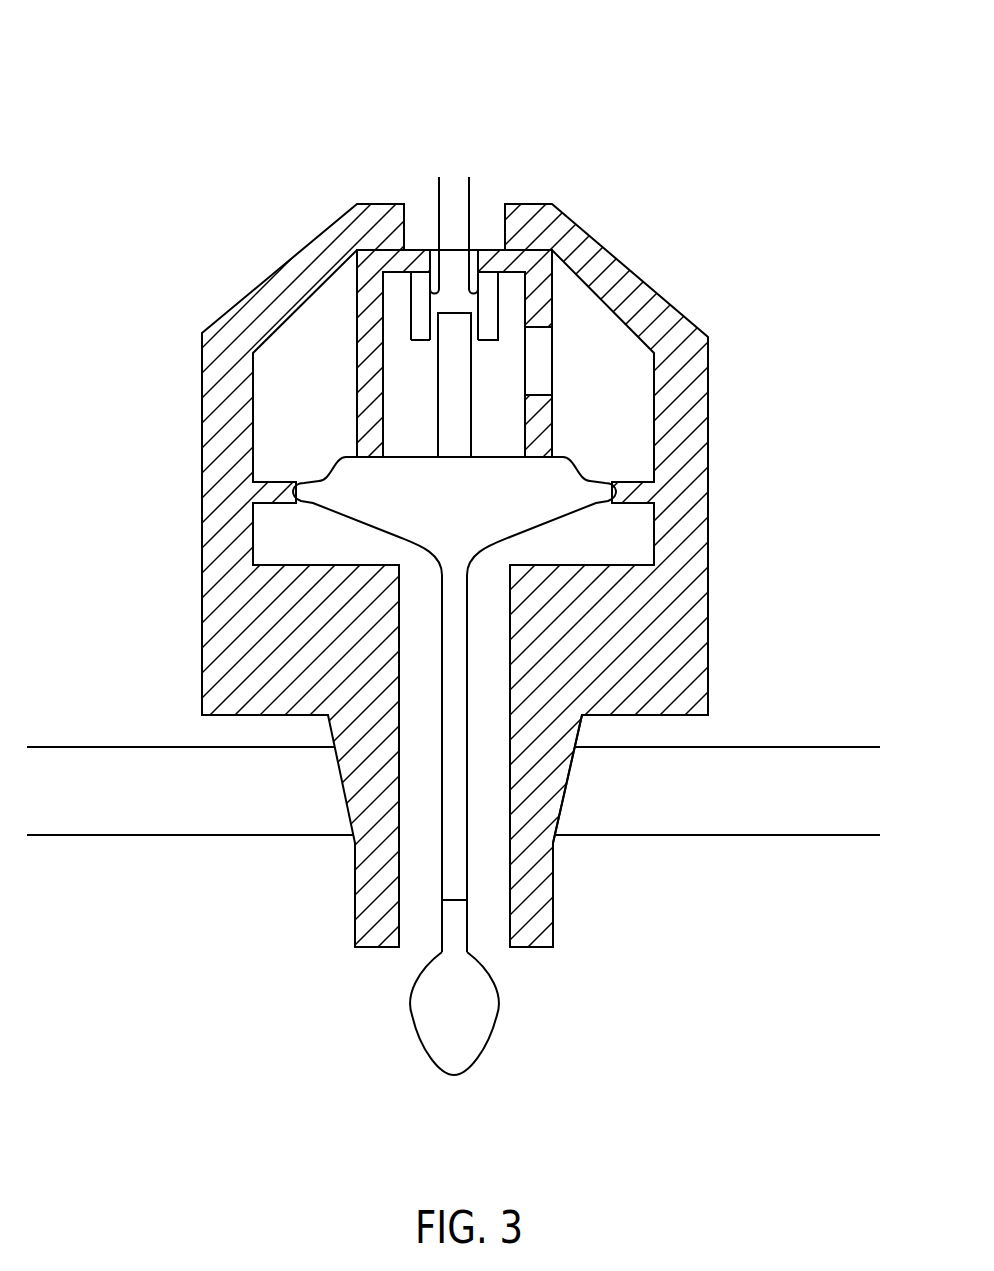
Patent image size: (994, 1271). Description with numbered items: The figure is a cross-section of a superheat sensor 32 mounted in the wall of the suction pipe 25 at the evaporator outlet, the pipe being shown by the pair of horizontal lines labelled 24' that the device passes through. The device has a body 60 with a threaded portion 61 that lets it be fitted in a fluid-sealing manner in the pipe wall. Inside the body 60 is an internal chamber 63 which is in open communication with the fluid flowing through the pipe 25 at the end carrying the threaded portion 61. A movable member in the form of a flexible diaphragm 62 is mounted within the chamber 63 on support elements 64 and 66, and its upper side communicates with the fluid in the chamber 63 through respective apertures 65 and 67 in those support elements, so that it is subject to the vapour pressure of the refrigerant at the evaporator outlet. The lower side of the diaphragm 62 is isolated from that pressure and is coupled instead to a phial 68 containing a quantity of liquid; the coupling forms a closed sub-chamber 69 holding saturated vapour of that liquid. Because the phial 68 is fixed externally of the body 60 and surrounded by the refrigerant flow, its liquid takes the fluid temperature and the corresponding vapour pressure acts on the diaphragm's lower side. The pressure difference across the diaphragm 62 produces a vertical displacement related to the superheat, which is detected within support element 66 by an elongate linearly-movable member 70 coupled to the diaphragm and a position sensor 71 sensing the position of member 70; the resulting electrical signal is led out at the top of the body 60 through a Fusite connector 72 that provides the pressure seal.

The sensor 32 is at (316, 84).
The suction pipe 25 is at (122, 722).
The conduit 24' is at (453, 791).
The body 60 is at (660, 658).
The threaded portion 61 is at (568, 778).
The flexible diaphragm 62 is at (497, 453).
The internal chamber 63 is at (320, 453).
The support element 64 is at (280, 505).
The aperture 65 is at (640, 481).
The support element 66 is at (370, 372).
The aperture 67 is at (545, 362).
The phial 68 is at (480, 1022).
The closed sub-chamber 69 is at (488, 521).
The elongate linearly-movable member 70 is at (457, 405).
The position sensor 71 is at (488, 307).
The Fusite connector 72 is at (490, 203).